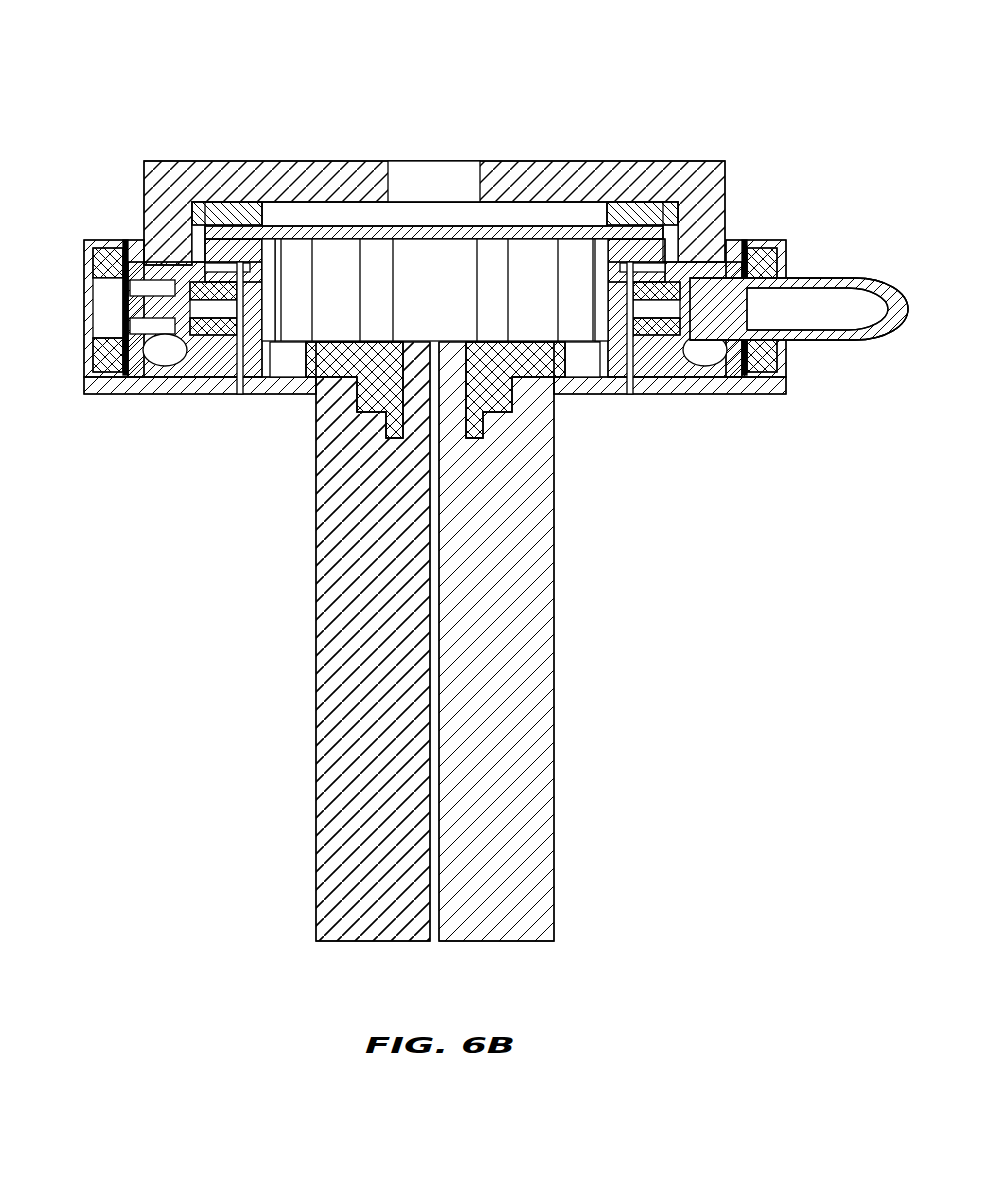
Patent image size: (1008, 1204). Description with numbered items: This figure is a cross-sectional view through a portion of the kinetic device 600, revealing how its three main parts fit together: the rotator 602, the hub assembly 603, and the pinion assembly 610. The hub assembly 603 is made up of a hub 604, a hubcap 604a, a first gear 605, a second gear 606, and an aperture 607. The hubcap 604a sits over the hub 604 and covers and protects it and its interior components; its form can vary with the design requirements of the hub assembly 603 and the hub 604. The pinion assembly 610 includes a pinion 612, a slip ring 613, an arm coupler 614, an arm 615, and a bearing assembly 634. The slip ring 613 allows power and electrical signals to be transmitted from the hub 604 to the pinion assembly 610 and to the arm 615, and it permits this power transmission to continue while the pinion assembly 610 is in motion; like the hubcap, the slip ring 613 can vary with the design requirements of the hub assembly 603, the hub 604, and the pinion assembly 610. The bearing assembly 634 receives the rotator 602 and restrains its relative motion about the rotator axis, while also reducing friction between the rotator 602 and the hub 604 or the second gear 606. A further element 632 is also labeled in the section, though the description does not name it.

The kinetic device 600 is at (110, 92).
The rotator 602 is at (347, 210).
The hub assembly 603 is at (765, 190).
The hub 604 is at (124, 395).
The hubcap 604a is at (437, 262).
The first gear 605 is at (565, 161).
The second gear 606 is at (555, 531).
The aperture 607 is at (80, 263).
The pinion assembly 610 is at (823, 250).
The pinion 612 is at (140, 258).
The slip ring 613 is at (222, 330).
The arm coupler 614 is at (740, 393).
The arm 615 is at (852, 343).
The retainer block 632 is at (93, 347).
The bearing assembly 634 is at (510, 407).